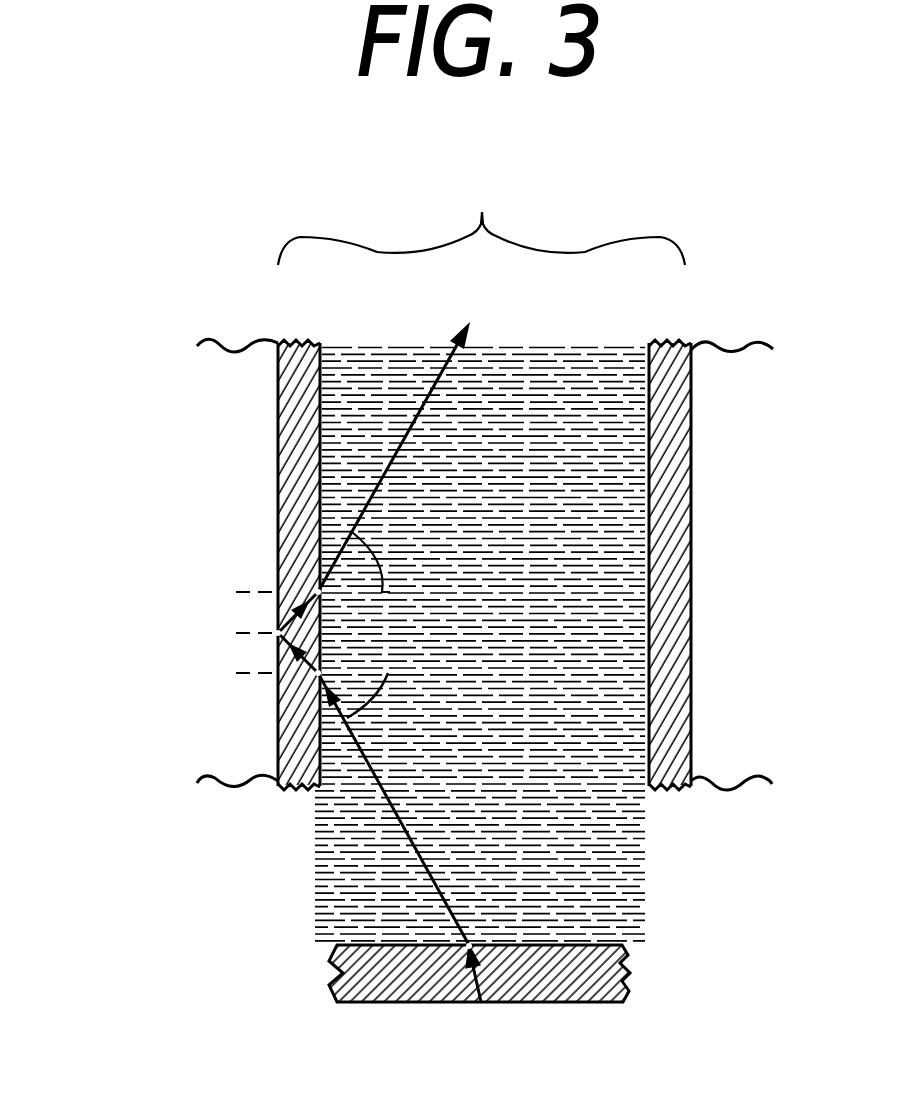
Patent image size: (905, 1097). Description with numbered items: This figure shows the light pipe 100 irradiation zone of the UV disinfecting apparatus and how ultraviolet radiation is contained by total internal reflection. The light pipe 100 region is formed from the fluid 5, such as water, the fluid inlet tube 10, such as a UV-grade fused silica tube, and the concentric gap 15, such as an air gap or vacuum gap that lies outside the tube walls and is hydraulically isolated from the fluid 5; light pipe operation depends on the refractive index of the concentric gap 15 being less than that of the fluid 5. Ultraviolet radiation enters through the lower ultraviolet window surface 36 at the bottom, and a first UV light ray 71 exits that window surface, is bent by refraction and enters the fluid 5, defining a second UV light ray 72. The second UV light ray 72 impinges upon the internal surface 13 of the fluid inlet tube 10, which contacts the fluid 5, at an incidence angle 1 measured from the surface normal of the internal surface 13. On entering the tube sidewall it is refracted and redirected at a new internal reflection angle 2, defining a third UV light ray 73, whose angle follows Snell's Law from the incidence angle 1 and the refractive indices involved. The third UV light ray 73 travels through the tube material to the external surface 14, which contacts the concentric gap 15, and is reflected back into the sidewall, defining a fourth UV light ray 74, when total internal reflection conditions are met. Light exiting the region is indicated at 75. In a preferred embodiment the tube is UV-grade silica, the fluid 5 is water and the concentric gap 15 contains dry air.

The light pipe 100 is at (481, 207).
The internal surface 13 is at (325, 357).
The external surface 14 is at (278, 377).
The fluid inlet tube 10 is at (292, 432).
The output light beam 75 is at (415, 418).
The concentric gap 15 is at (75, 613).
The second UV light ray 72 is at (318, 552).
The fourth UV light ray 74 is at (312, 595).
The internal reflection angle 2 is at (303, 632).
The third UV light ray 73 is at (296, 663).
The fluid 5 is at (530, 647).
The incidence angle 1 is at (388, 673).
The first UV light ray 71 is at (470, 980).
The lower ultraviolet window surface 36 is at (551, 990).